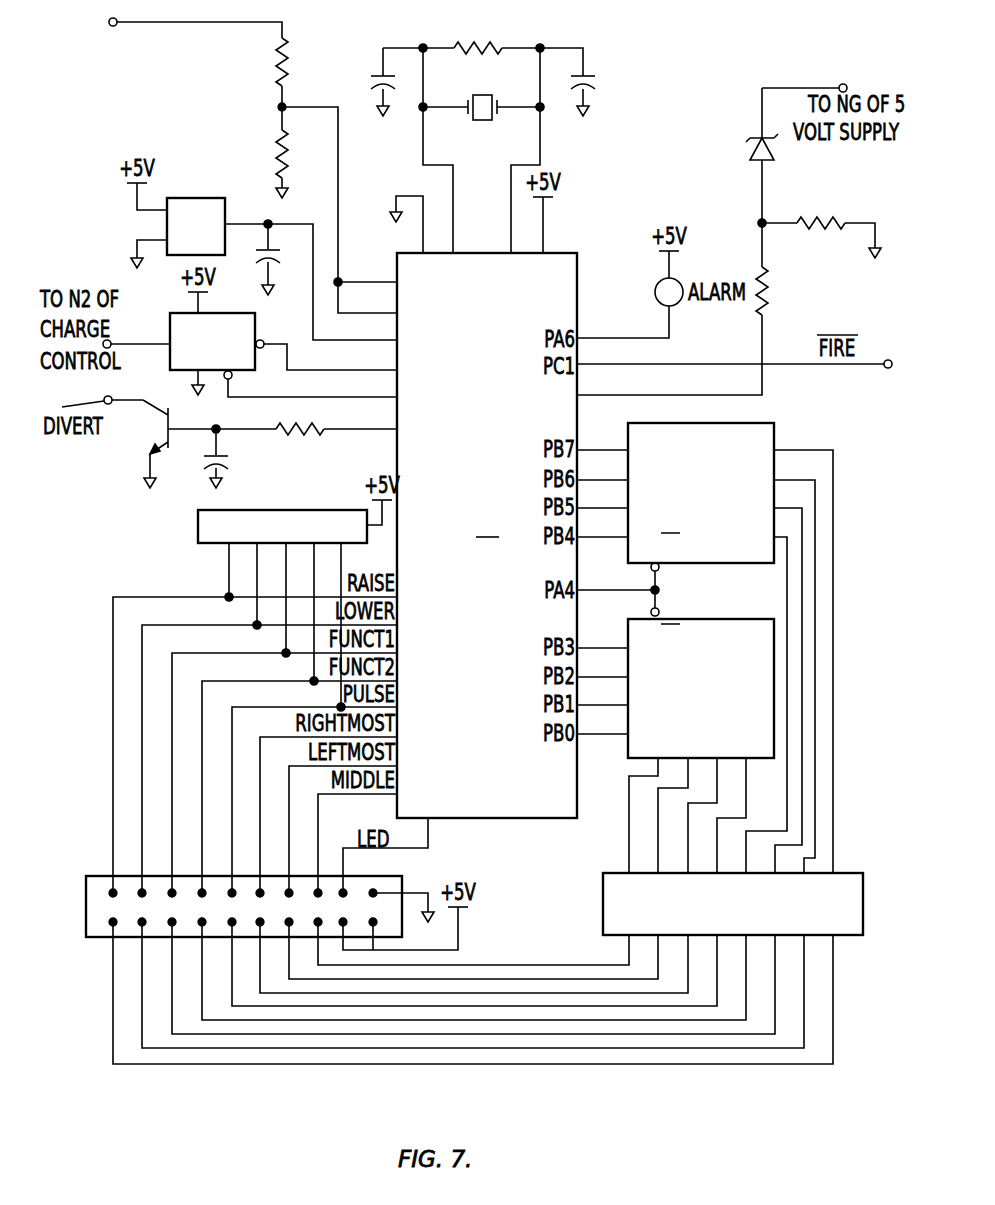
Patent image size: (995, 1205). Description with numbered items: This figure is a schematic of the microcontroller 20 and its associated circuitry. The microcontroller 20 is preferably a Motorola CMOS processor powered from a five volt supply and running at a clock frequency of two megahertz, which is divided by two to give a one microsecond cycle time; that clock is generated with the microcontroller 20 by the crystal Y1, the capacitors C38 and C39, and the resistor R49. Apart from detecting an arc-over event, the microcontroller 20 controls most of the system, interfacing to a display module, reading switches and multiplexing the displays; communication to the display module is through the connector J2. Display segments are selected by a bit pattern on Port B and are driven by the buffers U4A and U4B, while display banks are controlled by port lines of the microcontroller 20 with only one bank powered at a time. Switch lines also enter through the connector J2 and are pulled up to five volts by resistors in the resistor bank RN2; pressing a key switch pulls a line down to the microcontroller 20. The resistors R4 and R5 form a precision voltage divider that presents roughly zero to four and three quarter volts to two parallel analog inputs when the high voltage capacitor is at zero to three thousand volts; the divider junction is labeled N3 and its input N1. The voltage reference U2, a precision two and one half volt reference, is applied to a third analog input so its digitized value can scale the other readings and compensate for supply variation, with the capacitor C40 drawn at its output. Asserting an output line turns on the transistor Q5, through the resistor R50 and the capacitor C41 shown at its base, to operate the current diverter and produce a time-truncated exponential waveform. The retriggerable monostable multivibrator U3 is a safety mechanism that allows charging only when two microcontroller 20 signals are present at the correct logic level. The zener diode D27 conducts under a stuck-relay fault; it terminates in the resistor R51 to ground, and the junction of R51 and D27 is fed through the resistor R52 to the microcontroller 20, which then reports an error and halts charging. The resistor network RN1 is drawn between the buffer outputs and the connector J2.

The microcontroller 20 is at (499, 537).
The node N1 is at (120, 38).
The node N3 is at (268, 110).
The resistor R4 is at (271, 62).
The resistor R5 is at (271, 154).
The capacitor C38 is at (367, 84).
The resistor R49 is at (478, 34).
The crystal Y1 is at (482, 92).
The capacitor C39 is at (601, 85).
The zener diode D27 is at (744, 150).
The resistor R51 is at (821, 238).
The resistor R52 is at (781, 291).
The voltage reference U2 is at (196, 226).
The capacitor C40 is at (250, 266).
The retriggerable monostable multivibrator U3 is at (212, 342).
The transistor Q5 is at (151, 427).
The capacitor C41 is at (237, 464).
The resistor R50 is at (300, 444).
The resistor bank RN2 is at (282, 526).
The connector J2 is at (244, 906).
The resistor network RN1 is at (733, 904).
The buffer U4A is at (701, 493).
The buffer U4B is at (701, 689).